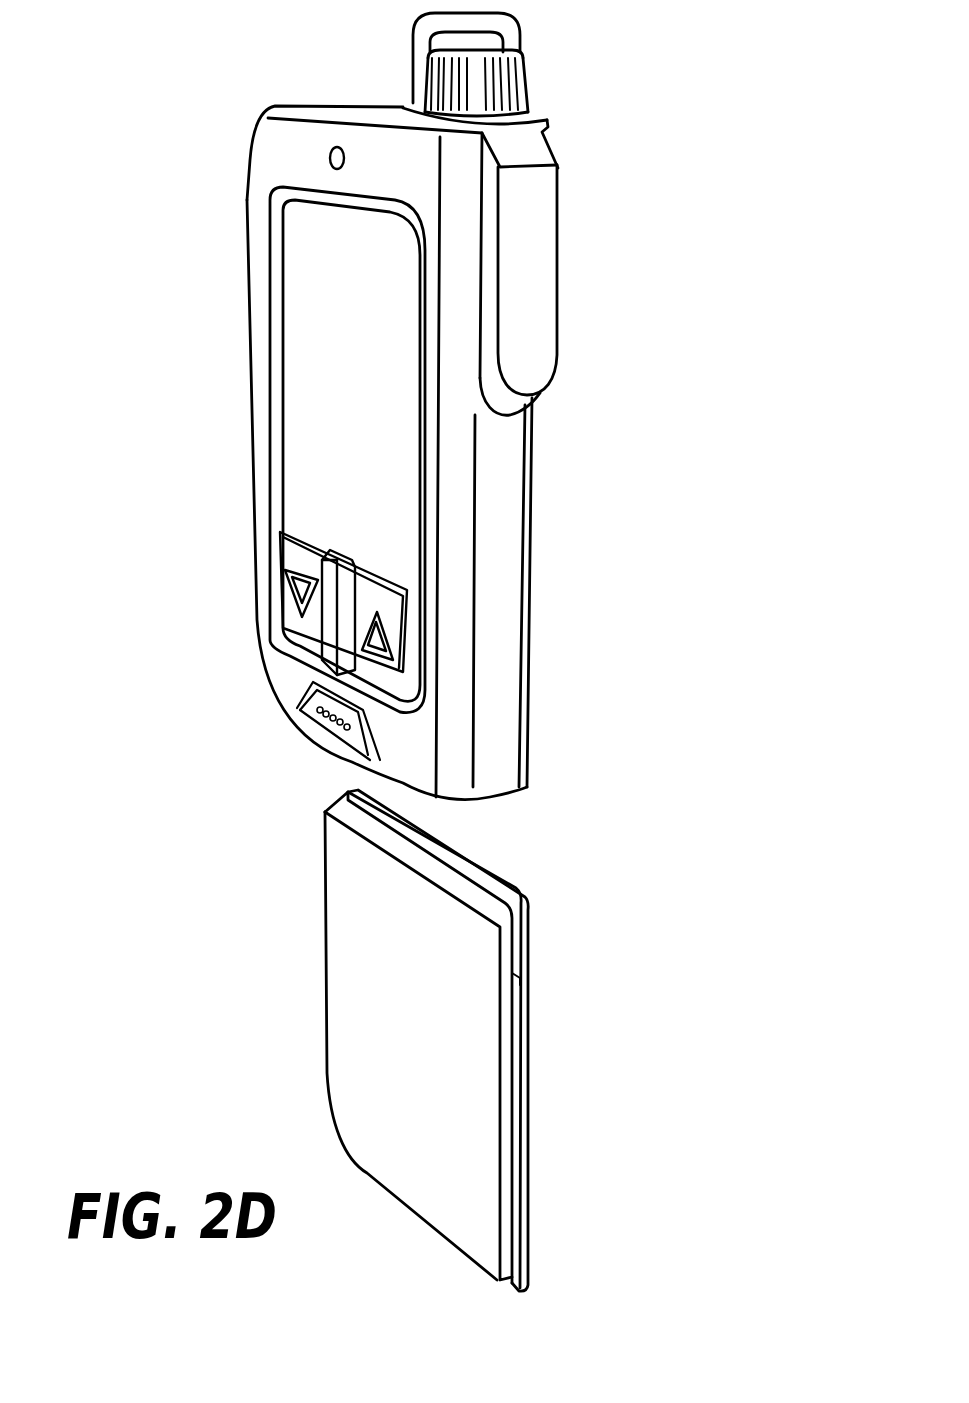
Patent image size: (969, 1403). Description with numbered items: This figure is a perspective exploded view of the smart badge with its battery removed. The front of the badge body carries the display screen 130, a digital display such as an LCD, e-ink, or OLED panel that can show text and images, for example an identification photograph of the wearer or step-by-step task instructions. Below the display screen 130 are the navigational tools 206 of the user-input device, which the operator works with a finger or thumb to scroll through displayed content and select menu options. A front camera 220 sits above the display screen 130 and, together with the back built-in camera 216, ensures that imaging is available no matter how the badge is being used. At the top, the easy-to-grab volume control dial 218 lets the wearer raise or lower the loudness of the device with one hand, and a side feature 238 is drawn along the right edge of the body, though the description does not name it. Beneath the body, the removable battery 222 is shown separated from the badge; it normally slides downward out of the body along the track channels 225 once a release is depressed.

The display screen 130 is at (315, 335).
The navigational tools 206 is at (255, 583).
The back built-in camera 216 is at (521, 33).
The volume control dial 218 is at (530, 90).
The front camera 220 is at (338, 147).
The removable battery 222 is at (333, 1049).
The track channels 225 is at (530, 1043).
The clip 238 is at (538, 268).